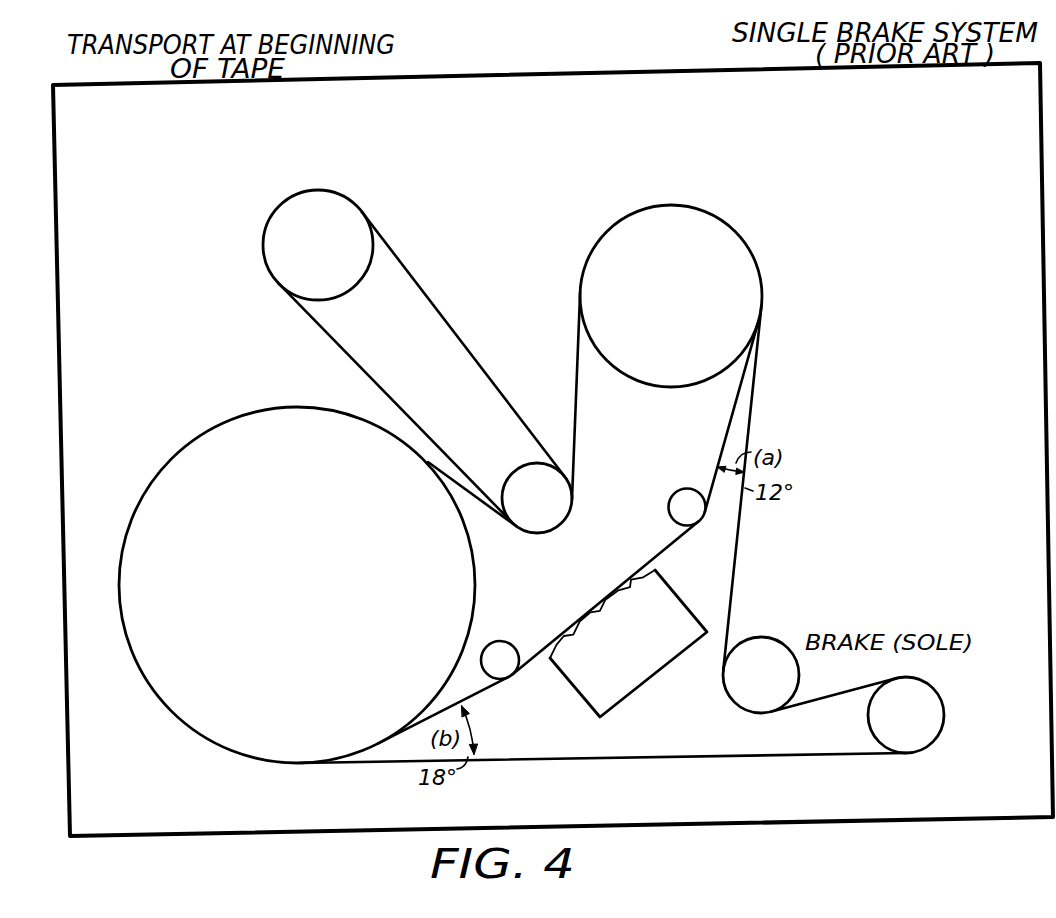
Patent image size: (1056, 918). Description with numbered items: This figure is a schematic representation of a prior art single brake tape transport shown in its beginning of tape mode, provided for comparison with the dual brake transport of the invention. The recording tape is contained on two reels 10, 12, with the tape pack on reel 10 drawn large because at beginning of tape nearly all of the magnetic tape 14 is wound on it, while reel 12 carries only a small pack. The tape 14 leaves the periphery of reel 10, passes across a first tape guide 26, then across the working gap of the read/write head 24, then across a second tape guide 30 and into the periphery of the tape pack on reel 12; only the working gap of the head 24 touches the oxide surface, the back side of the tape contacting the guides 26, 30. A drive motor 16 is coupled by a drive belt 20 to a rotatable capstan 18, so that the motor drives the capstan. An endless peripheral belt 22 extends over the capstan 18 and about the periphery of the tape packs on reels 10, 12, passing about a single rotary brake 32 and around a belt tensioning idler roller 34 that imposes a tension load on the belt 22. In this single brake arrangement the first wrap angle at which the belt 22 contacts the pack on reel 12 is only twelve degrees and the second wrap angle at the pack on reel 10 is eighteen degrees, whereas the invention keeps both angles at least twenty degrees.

The reel 10 is at (200, 437).
The reel 12 is at (683, 206).
The magnetic tape 14 is at (650, 561).
The drive motor 16 is at (303, 190).
The capstan 18 is at (574, 499).
The drive belt 20 is at (415, 279).
The peripheral belt 22 is at (741, 541).
The read/write head 24 is at (674, 592).
The first tape guide 26 is at (494, 641).
The second tape guide 30 is at (686, 489).
The rotary brake 32 is at (768, 643).
The belt tensioning idler roller 34 is at (934, 689).